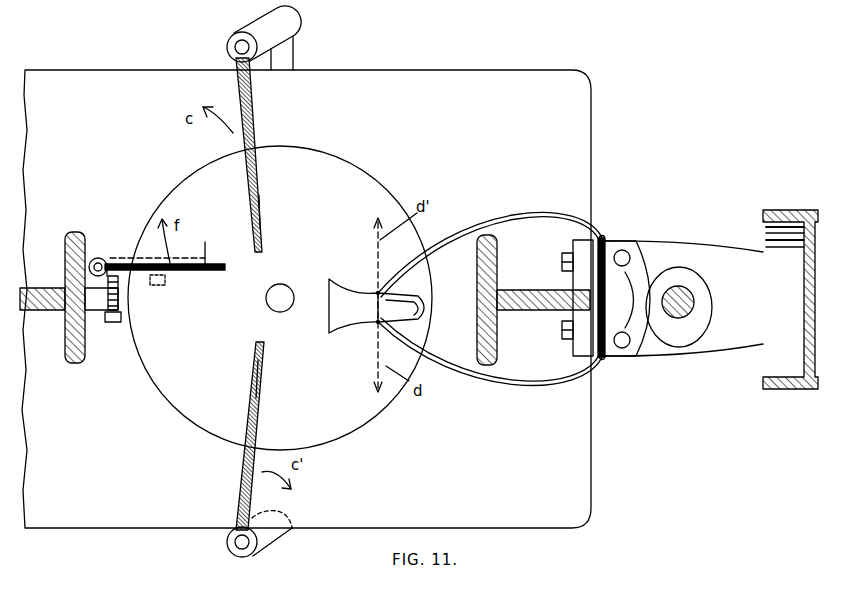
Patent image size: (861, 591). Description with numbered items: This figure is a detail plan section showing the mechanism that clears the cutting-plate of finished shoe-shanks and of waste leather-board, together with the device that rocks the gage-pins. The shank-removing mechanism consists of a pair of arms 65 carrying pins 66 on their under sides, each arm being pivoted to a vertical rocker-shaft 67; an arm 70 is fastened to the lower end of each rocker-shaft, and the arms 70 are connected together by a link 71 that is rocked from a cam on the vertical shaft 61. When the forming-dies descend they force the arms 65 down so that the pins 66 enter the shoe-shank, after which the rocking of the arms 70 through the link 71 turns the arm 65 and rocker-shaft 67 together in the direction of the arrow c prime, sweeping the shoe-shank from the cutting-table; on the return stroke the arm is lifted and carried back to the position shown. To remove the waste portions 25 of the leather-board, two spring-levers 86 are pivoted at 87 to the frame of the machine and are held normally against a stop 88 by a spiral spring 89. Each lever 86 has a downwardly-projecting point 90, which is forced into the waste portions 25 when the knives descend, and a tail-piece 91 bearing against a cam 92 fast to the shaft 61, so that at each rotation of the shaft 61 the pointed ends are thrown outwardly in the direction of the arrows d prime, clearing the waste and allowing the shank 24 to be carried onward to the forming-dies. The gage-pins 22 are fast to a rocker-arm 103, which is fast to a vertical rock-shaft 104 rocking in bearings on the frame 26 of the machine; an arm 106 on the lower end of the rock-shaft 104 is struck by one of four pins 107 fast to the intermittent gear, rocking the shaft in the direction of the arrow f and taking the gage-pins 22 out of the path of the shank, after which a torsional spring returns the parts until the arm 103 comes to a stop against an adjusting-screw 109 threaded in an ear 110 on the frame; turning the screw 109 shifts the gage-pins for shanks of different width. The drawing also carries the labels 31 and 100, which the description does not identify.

The gage-pins 22 is at (160, 268).
The shank 24 is at (353, 306).
The waste portions 25 is at (392, 318).
The frame 26 is at (45, 295).
The frame member 31 is at (773, 362).
The vertical shaft 61 is at (696, 302).
The arms 65 is at (258, 114).
The pins 66 is at (222, 558).
The rocker-shaft 67 is at (228, 46).
The arm 70 is at (274, 35).
The link 71 is at (284, 52).
The spring-levers 86 is at (557, 220).
The pivot 87 is at (629, 251).
The stop 88 is at (583, 253).
The spiral spring 89 is at (608, 297).
The downwardly-projecting point 90 is at (368, 336).
The tail-piece 91 is at (650, 292).
The cam 92 is at (686, 342).
The casing 100 is at (306, 299).
The rocker-arm 103 is at (125, 262).
The rock-shaft 104 is at (97, 258).
The arm 106 is at (162, 267).
The pins 107 is at (162, 282).
The adjusting-screw 109 is at (113, 323).
The ear 110 is at (100, 312).